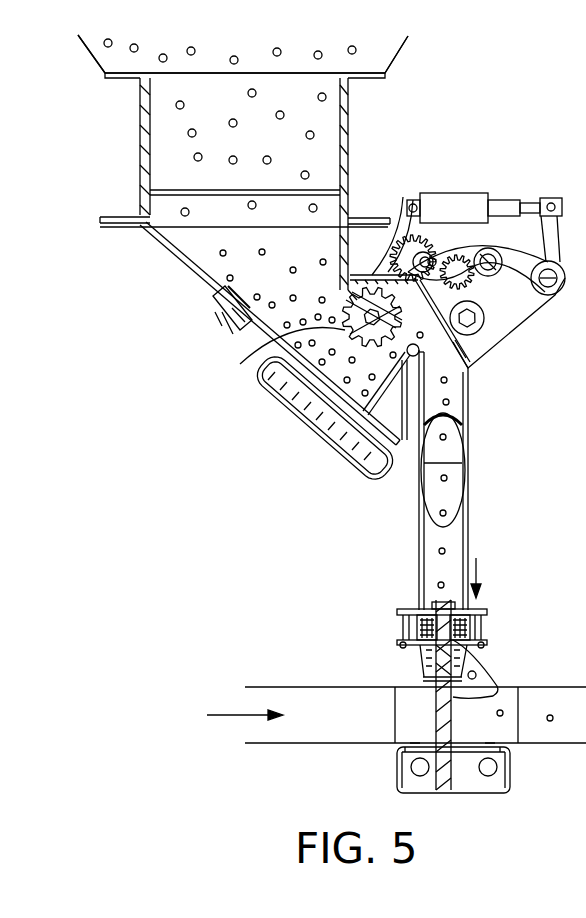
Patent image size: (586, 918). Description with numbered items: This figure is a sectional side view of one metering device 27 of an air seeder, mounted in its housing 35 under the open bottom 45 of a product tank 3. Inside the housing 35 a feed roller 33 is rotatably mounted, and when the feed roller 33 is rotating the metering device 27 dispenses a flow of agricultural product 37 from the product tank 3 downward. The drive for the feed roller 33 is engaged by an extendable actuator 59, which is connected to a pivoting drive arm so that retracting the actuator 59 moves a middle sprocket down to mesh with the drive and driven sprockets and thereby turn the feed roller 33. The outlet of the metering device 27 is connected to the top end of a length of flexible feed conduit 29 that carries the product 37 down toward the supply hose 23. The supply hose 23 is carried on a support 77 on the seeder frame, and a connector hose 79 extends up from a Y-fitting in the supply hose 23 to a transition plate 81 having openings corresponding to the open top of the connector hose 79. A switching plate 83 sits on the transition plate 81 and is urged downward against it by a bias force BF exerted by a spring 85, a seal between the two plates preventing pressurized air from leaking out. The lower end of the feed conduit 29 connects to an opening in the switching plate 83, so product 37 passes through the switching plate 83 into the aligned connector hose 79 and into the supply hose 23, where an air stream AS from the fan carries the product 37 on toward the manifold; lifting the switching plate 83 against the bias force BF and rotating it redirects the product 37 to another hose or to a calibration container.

The product tank 3 is at (393, 53).
The open bottom 45 is at (155, 65).
The agricultural product 37 is at (196, 156).
The feed roller 33 is at (274, 350).
The metering device 27 is at (400, 205).
The extendable actuator 59 is at (480, 195).
The housing 35 is at (468, 366).
The flexible feed conduit 29 is at (470, 552).
The switching plate 83 is at (403, 608).
The spring 85 is at (458, 650).
The transition plate 81 is at (400, 644).
The connector hose 79 is at (490, 668).
The supply hose 23 is at (283, 745).
The support 77 is at (512, 770).
The air stream AS is at (225, 715).
The bias force BF is at (477, 568).